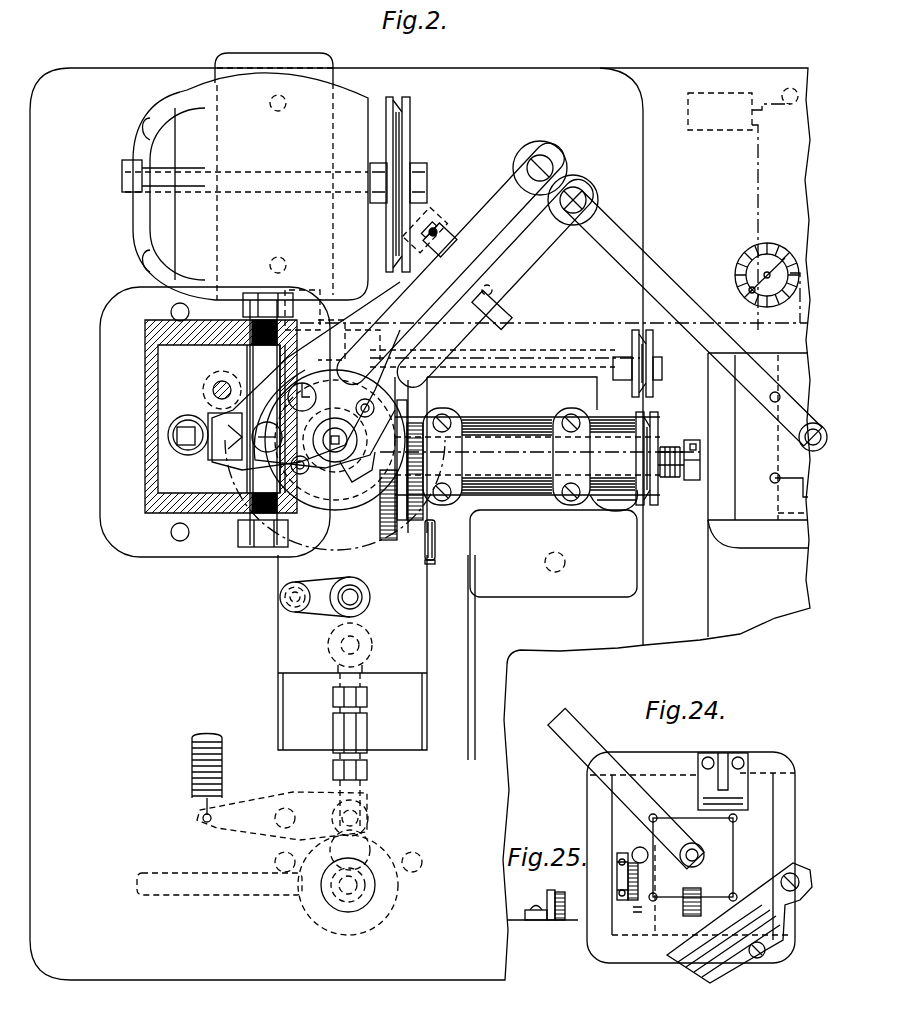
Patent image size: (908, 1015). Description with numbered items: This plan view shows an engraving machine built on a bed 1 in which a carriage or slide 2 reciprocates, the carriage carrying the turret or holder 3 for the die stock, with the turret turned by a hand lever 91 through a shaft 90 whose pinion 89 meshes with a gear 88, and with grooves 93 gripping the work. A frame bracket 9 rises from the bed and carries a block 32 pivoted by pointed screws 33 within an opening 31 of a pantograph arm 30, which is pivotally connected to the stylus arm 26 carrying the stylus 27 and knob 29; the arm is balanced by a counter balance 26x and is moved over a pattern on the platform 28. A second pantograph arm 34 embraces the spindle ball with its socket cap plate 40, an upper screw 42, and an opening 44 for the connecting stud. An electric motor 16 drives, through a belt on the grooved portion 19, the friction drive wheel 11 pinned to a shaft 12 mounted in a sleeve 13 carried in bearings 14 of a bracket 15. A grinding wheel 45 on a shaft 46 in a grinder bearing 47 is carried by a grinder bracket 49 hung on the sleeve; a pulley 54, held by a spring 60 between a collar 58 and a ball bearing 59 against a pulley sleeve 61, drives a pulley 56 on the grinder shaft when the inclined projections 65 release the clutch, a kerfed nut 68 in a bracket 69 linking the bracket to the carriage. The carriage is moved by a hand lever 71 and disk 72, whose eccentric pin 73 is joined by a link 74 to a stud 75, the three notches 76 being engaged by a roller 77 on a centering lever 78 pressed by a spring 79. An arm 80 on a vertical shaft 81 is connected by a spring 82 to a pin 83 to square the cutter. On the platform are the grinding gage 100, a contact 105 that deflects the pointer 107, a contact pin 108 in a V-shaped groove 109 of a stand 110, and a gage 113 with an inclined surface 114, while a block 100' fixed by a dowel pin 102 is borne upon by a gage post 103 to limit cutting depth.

In FIG. 2, the bed 1 is at (420, 524).
In FIG. 2, the carriage or slide 2 is at (278, 660).
In FIG. 2, the turret or holder 3 is at (328, 510).
In FIG. 2, the frame bracket 9 is at (145, 437).
In FIG. 2, the friction drive wheel 11 is at (380, 520).
In FIG. 2, the shaft 12 is at (676, 470).
In FIG. 2, the sleeve 13 is at (488, 418).
In FIG. 2, the bearings 14 is at (506, 456).
In FIG. 2, the bracket 15 is at (543, 505).
In FIG. 2, the electric motor 16 is at (245, 176).
In FIG. 2, the grooved portion 19 is at (407, 520).
In FIG. 2, the arm 26 is at (660, 278).
In FIG. 24, the arm 26 is at (574, 752).
In FIG. 2, the counter balance 26x is at (182, 455).
In FIG. 2, the stylus 27 is at (793, 428).
In FIG. 24, the stylus 27 is at (688, 860).
In FIG. 2, the platform 28 is at (766, 532).
In FIG. 24, the platform 28 is at (623, 822).
In FIG. 2, the knob or finger piece 29 is at (804, 448).
In FIG. 24, the knob or finger piece 29 is at (703, 855).
In FIG. 2, the pantograph arm 30 is at (490, 214).
In FIG. 2, the opening 31 is at (236, 476).
In FIG. 2, the block 32 is at (248, 354).
In FIG. 2, the pointed screws 33 is at (252, 300).
In FIG. 2, the second pantograph arm 34 is at (528, 248).
In FIG. 2, the socket cap plate 40 is at (312, 478).
In FIG. 2, the upper screw 42 is at (300, 383).
In FIG. 2, the opening 44 is at (420, 380).
In FIG. 2, the grinding wheel 45 is at (340, 312).
In FIG. 2, the shaft 46 is at (500, 362).
In FIG. 2, the grinder bearing 47 is at (580, 352).
In FIG. 2, the grinder bracket 49 is at (505, 495).
In FIG. 2, the pulley 54 is at (660, 418).
In FIG. 2, the pulley 56 is at (653, 342).
In FIG. 2, the collar 58 is at (698, 447).
In FIG. 2, the ball bearing 59 is at (664, 446).
In FIG. 2, the spring 60 is at (700, 468).
In FIG. 2, the pulley sleeve 61 is at (622, 478).
In FIG. 2, the inclined projections 65 is at (548, 456).
In FIG. 2, the nut 68 is at (431, 563).
In FIG. 2, the bracket 69 is at (455, 530).
In FIG. 2, the hand lever 71 is at (222, 895).
In FIG. 2, the disk 72 is at (310, 912).
In FIG. 2, the pin 73 is at (360, 845).
In FIG. 2, the link 74 is at (365, 783).
In FIG. 2, the stud or pin 75 is at (360, 645).
In FIG. 2, the notches 76 is at (365, 835).
In FIG. 2, the roller 77 is at (338, 812).
In FIG. 2, the centering lever 78 is at (262, 836).
In FIG. 2, the spring 79 is at (192, 770).
In FIG. 2, the arm 80 is at (304, 302).
In FIG. 2, the vertical shaft 81 is at (213, 386).
In FIG. 2, the spring 82 is at (369, 338).
In FIG. 2, the pin 83 is at (418, 352).
In FIG. 2, the gear 88 is at (397, 597).
In FIG. 2, the pinion 89 is at (372, 605).
In FIG. 2, the shaft 90 is at (345, 605).
In FIG. 2, the hand lever 91 is at (280, 600).
In FIG. 2, the grooves 93 is at (355, 485).
In FIG. 24, the grinding gage 100 is at (704, 781).
In FIG. 2, the block 100' is at (446, 201).
In FIG. 2, the dowel pin 102 is at (505, 312).
In FIG. 2, the gage post or arm 103 is at (434, 262).
In FIG. 24, the contact 105 is at (634, 852).
In FIG. 25, the contact 105 is at (556, 892).
In FIG. 2, the pointer 107 is at (755, 262).
In FIG. 24, the contact pin 108 is at (626, 870).
In FIG. 24, the V-shaped groove 109 is at (618, 887).
In FIG. 25, the V-shaped groove 109 is at (546, 906).
In FIG. 24, the stand 110 is at (628, 902).
In FIG. 25, the stand 110 is at (537, 920).
In FIG. 24, the gage 113 is at (745, 962).
In FIG. 24, the inclined surface 114 is at (745, 924).